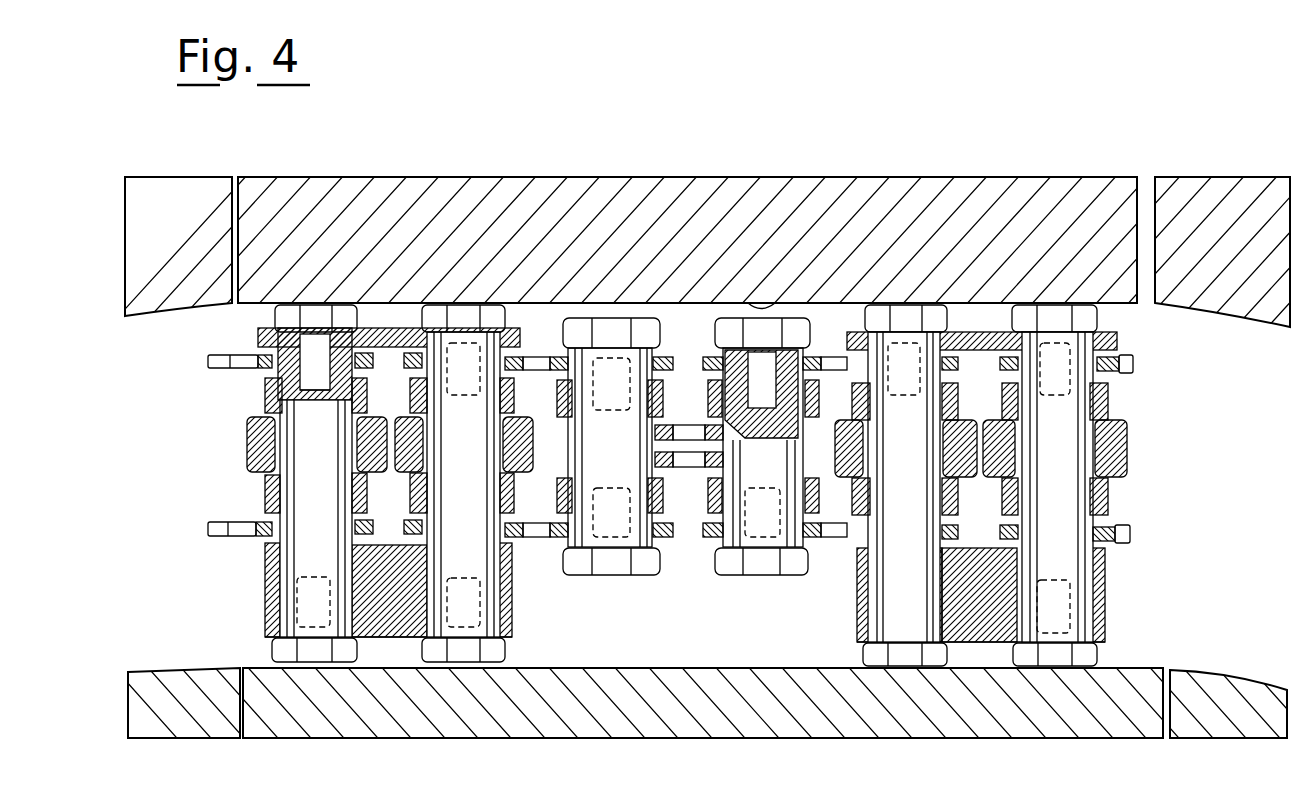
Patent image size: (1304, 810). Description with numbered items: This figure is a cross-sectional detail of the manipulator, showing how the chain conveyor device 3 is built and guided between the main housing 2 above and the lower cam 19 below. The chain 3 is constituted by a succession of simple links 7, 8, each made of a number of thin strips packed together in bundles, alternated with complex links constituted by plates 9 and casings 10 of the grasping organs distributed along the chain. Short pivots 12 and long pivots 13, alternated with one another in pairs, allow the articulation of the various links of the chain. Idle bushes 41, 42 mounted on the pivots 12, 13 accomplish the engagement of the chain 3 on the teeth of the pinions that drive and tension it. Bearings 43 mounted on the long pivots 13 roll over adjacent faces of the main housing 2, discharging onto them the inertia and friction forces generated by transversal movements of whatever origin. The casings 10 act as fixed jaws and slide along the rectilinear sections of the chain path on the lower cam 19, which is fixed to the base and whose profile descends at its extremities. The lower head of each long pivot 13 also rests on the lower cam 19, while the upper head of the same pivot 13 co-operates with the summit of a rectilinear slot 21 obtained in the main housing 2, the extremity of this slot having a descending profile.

The main housing 2 is at (702, 207).
The chain conveyor device 3 is at (1160, 487).
The simple links 7 is at (240, 355).
The simple links 8 is at (708, 428).
The plates 9 is at (393, 330).
The casings 10 is at (267, 590).
The short pivots 12 is at (585, 550).
The long pivots 13 is at (305, 437).
The lower cam 19 is at (668, 720).
The rectilinear slot 21 is at (777, 300).
The idle bushes 41 is at (558, 410).
The idle bushes 42 is at (265, 497).
The bearings 43 is at (245, 450).